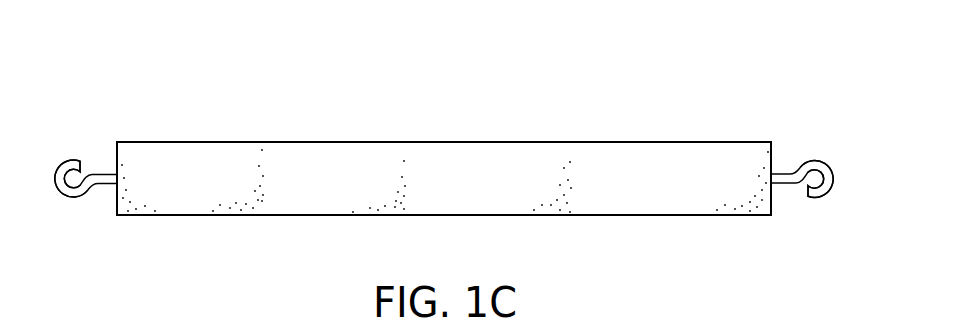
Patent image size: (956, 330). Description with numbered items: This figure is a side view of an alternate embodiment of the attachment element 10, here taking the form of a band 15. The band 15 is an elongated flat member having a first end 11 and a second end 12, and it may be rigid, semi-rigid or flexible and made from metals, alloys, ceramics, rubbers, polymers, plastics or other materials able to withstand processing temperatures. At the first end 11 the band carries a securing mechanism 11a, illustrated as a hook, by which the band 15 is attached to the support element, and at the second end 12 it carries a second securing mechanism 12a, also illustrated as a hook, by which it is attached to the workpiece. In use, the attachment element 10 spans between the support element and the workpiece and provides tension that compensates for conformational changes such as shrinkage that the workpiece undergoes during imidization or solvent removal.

The attachment element 10 is at (456, 118).
The first end 11 is at (124, 126).
The securing mechanism 11a is at (72, 215).
The second end 12 is at (768, 125).
The securing mechanism 12a is at (821, 217).
The band 15 is at (446, 232).